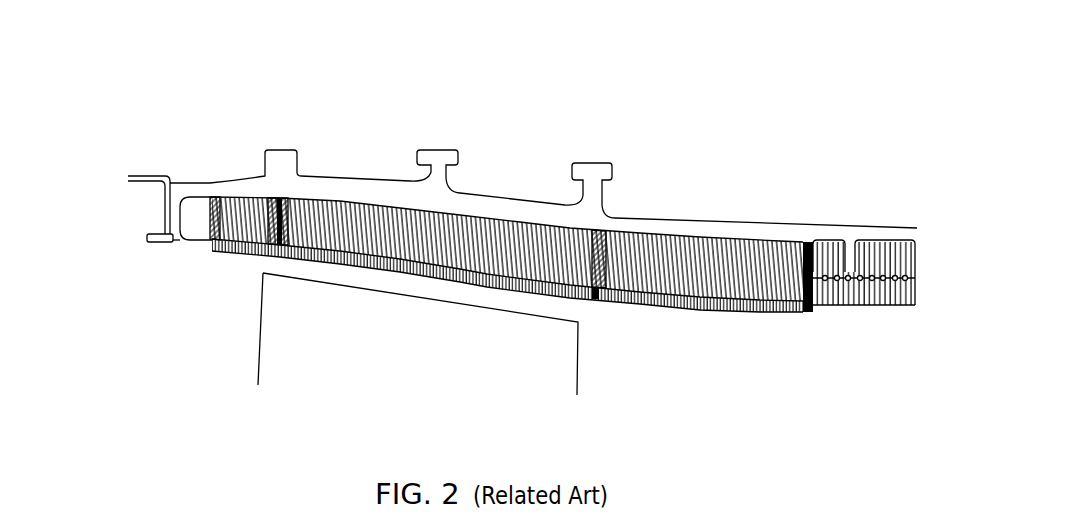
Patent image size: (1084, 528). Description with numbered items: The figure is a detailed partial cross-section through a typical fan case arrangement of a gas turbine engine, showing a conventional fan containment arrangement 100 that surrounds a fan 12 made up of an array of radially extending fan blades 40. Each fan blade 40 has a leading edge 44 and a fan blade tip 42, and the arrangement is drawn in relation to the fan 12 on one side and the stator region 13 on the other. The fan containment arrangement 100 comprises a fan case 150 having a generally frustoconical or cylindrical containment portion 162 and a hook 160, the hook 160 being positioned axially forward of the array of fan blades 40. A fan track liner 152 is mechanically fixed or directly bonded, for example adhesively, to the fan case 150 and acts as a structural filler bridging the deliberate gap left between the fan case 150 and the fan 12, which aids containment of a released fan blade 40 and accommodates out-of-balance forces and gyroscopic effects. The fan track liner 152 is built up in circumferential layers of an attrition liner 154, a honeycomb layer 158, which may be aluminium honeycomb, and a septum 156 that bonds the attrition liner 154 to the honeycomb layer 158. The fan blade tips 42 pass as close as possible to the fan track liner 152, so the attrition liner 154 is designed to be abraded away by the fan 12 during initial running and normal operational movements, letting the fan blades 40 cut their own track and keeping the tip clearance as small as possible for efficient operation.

The fan containment arrangement 100 is at (483, 120).
The fan 12 is at (207, 359).
The stator 13 is at (868, 396).
The fan blade 40 is at (283, 347).
The fan blade tip 42 is at (330, 273).
The leading edge 44 is at (262, 300).
The fan case 150 is at (697, 229).
The fan track liner 152 is at (705, 278).
The attrition liner 154 is at (487, 287).
The septum 156 is at (350, 241).
The honeycomb layer 158 is at (406, 236).
The hook 160 is at (173, 221).
The containment portion 162 is at (502, 207).